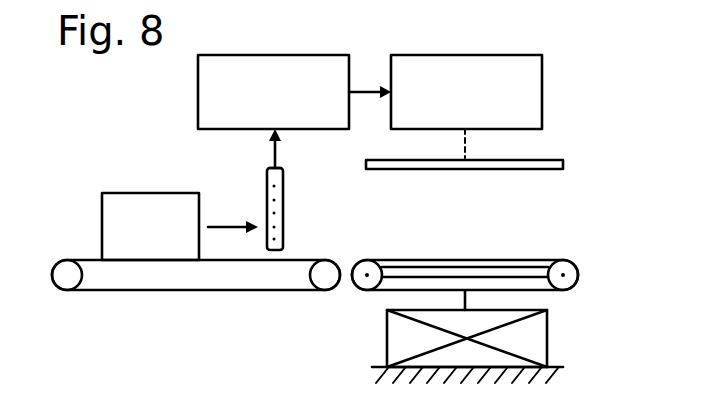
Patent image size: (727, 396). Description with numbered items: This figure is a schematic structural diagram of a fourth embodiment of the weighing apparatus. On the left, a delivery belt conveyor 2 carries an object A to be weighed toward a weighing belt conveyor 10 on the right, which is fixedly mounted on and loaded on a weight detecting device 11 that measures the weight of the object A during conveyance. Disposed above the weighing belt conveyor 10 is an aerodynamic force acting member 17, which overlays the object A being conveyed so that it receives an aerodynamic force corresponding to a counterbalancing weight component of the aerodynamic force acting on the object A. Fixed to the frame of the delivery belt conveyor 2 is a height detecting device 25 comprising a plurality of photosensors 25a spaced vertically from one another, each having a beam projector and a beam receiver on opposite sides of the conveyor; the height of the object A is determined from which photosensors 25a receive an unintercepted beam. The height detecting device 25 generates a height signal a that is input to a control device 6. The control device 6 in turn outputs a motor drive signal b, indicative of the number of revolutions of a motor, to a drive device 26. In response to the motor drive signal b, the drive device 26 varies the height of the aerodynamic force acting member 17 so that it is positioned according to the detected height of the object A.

The control device 6 is at (198, 98).
The drive device 26 is at (542, 59).
The aerodynamic force acting member 17 is at (540, 158).
The height detecting device 25 is at (283, 197).
The photosensors 25a is at (267, 183).
The delivery belt conveyor 2 is at (215, 292).
The weighing belt conveyor 10 is at (533, 260).
The weight detecting device 11 is at (547, 335).
The object to be weighed A is at (102, 215).
The height signal a is at (280, 150).
The motor drive signal b is at (379, 94).